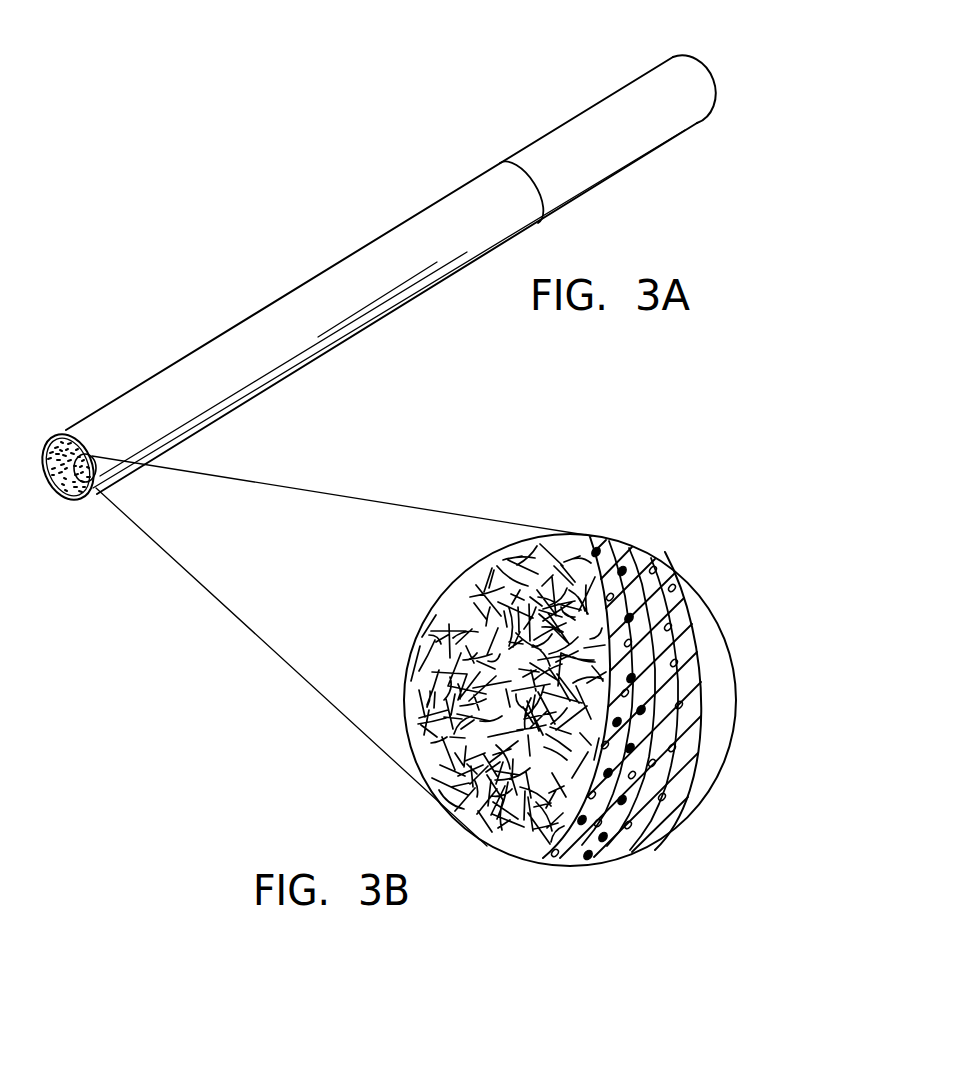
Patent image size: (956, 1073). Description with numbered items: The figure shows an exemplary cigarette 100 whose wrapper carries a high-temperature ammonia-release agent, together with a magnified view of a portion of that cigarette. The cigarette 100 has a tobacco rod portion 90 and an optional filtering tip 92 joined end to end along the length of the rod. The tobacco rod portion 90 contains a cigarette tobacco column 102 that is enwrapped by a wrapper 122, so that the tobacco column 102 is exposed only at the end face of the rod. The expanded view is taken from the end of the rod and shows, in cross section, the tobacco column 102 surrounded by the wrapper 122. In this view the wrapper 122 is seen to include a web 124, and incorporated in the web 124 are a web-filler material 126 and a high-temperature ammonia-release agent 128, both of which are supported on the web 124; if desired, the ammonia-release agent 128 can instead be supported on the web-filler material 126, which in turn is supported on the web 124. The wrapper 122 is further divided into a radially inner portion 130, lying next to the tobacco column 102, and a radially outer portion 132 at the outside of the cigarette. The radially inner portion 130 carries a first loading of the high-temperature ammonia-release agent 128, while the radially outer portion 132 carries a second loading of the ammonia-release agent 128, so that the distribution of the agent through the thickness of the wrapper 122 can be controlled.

In FIG. 3A, the cigarette 100 is at (204, 183).
In FIG. 3A, the filtering tip 92 is at (608, 130).
In FIG. 3A, the tobacco rod portion 90 is at (335, 295).
In FIG. 3A, the wrapper 122 is at (153, 403).
In FIG. 3B, the wrapper 122 is at (703, 737).
In FIG. 3A, the cigarette tobacco column 102 is at (72, 472).
In FIG. 3B, the cigarette tobacco column 102 is at (410, 663).
In FIG. 3B, the radially inner portion 130 is at (600, 536).
In FIG. 3B, the high-temperature ammonia-release agent 128 is at (655, 566).
In FIG. 3B, the web 124 is at (700, 632).
In FIG. 3B, the web-filler material 126 is at (645, 680).
In FIG. 3B, the radially outer portion 132 is at (643, 850).